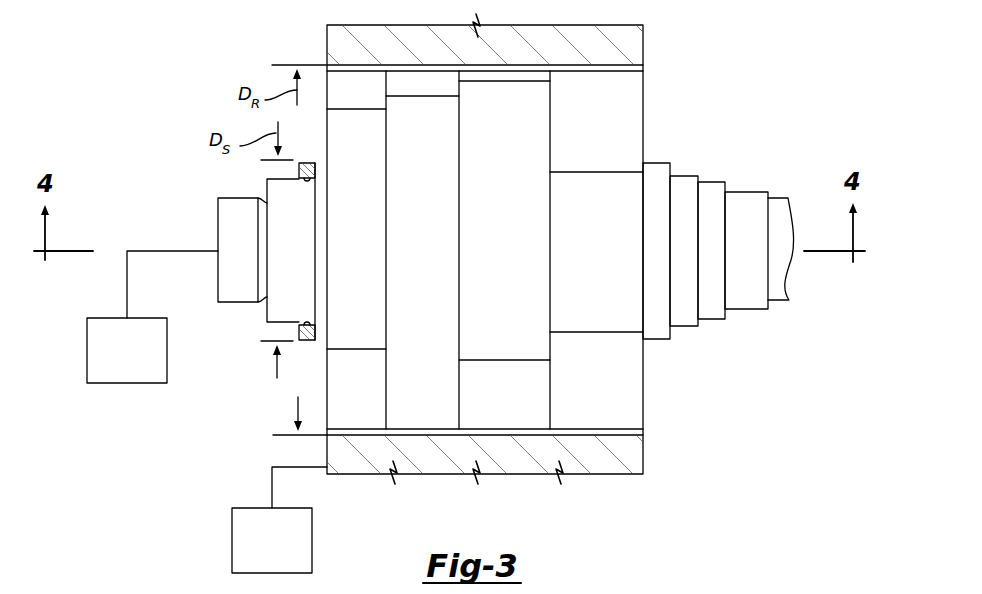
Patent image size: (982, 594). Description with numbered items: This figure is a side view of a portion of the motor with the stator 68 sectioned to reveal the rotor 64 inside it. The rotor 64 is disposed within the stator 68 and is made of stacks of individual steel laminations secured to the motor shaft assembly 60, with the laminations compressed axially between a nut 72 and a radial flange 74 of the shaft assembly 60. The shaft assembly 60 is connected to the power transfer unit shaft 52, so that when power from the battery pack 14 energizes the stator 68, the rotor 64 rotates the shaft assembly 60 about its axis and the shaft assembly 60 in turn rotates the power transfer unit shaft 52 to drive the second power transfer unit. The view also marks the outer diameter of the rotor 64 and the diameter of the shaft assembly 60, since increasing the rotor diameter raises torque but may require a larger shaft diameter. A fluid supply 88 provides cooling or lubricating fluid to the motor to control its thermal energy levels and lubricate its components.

The stator 68 is at (643, 42).
The rotor 64 is at (624, 102).
The radial flange 74 is at (657, 163).
The motor shaft assembly 60 is at (712, 182).
The power transfer unit shaft 52 is at (780, 198).
The nut 72 is at (299, 333).
The fluid supply 88 is at (87, 352).
The battery pack 14 is at (232, 541).